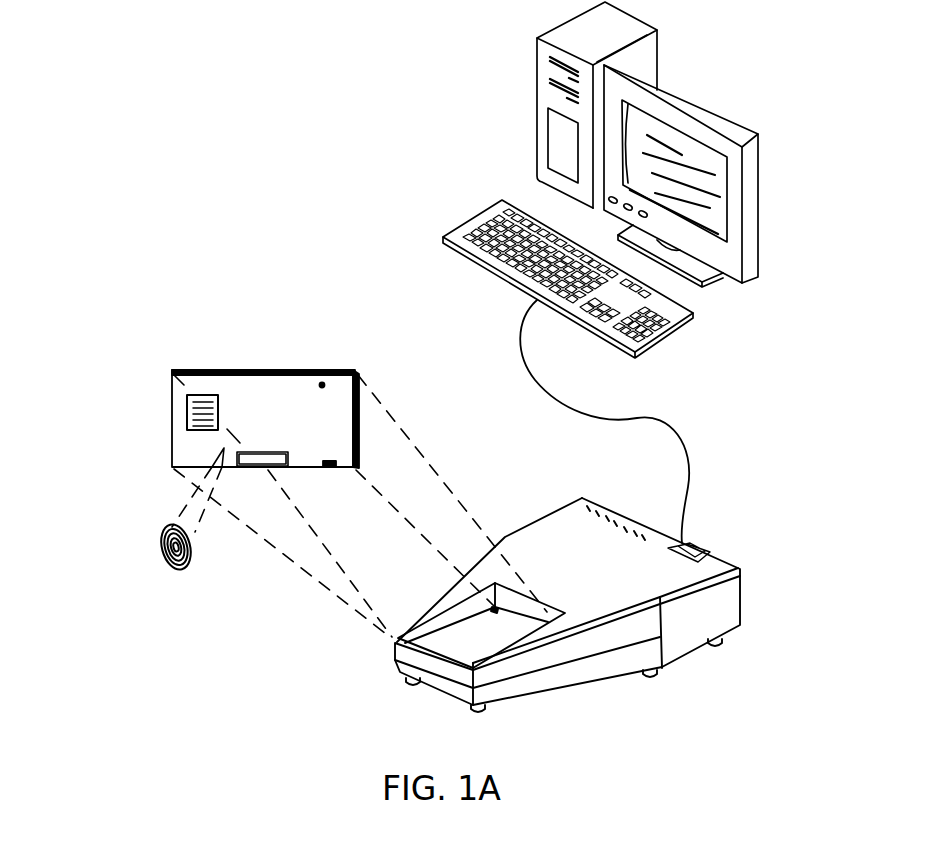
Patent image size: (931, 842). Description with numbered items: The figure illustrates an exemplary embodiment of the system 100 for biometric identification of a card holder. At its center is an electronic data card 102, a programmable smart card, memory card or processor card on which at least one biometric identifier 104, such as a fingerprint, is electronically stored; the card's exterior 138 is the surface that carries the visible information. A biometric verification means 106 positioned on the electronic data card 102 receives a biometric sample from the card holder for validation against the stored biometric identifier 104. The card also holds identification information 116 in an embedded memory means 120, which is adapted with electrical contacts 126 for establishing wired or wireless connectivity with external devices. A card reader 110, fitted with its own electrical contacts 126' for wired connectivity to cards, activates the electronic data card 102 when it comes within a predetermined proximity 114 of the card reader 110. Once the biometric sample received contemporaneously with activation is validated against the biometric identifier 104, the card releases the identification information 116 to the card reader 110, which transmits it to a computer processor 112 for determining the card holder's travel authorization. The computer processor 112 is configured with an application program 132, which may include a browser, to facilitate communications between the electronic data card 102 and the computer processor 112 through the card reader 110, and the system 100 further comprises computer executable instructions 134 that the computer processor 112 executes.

The system 100 is at (218, 99).
The electronic data card 102 is at (324, 422).
The biometric identifier 104 is at (140, 535).
The biometric verification means 106 is at (194, 398).
The card reader 110 is at (599, 505).
The computer processor 112 is at (537, 163).
The predetermined proximity 114 is at (359, 462).
The identification information 116 is at (262, 466).
The memory means 120 is at (547, 73).
The electrical contacts 126 is at (343, 486).
The electrical contacts 126' is at (467, 679).
The application program 132 is at (690, 155).
The computer executable instructions 134 is at (722, 212).
The card's exterior 138 is at (322, 385).